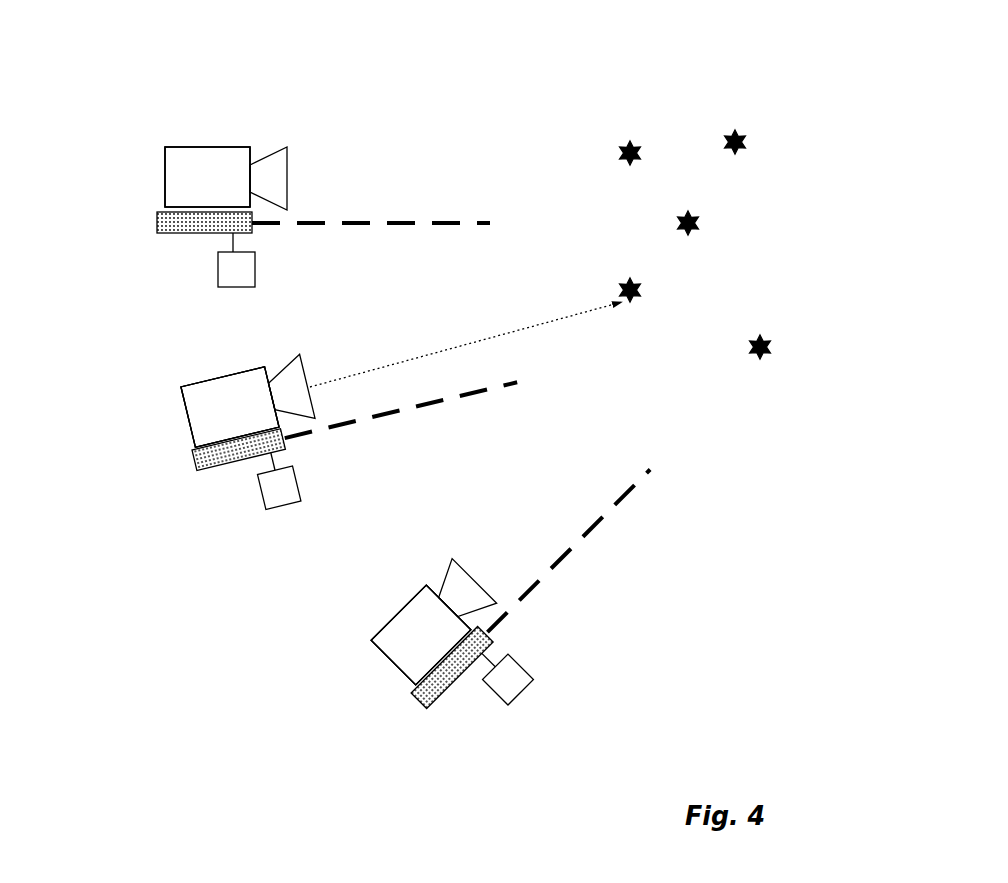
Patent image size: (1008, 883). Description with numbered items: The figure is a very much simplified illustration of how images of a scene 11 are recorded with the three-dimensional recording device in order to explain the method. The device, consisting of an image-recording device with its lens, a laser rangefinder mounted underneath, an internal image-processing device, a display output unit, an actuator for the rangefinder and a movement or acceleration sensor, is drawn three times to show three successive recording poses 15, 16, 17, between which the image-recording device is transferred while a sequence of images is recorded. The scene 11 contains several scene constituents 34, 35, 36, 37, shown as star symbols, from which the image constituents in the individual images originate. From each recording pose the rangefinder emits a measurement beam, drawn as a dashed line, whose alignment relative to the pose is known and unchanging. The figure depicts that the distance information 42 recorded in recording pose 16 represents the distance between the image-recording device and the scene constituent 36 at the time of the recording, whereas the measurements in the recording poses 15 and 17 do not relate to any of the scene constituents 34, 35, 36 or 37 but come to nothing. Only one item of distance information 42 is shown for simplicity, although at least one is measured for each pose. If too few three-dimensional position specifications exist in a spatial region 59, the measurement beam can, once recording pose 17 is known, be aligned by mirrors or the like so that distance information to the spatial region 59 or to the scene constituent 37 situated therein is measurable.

The scene 11 is at (672, 88).
The recording pose 15 is at (105, 232).
The recording pose 16 is at (148, 515).
The recording pose 17 is at (305, 765).
The scene constituent 34 is at (620, 130).
The scene constituent 35 is at (710, 220).
The scene constituent 36 is at (645, 310).
The scene constituent 37 is at (765, 366).
The distance information 42 is at (383, 365).
The spatial region 59 is at (812, 328).